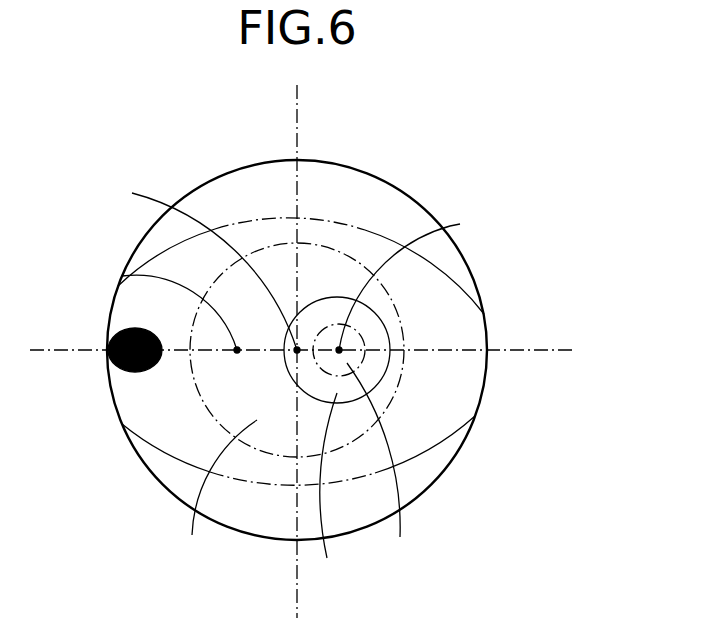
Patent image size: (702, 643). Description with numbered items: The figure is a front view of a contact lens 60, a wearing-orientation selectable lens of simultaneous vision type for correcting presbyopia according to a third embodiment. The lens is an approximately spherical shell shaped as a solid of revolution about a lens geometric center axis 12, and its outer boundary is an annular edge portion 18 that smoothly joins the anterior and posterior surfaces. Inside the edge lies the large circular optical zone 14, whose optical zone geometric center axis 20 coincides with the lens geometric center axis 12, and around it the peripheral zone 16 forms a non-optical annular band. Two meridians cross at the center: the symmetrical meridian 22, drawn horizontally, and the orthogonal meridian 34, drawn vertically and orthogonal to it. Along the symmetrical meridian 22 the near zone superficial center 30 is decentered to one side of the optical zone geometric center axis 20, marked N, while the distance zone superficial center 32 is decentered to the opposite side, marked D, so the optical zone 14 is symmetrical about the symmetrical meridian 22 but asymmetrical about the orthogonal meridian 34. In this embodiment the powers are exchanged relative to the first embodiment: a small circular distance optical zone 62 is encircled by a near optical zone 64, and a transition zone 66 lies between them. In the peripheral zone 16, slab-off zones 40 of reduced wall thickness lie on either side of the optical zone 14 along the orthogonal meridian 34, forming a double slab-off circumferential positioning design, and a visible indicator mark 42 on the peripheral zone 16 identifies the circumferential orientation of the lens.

The lens geometric center axis 12 is at (184, 265).
The optical zone geometric center axis 20 is at (184, 265).
The optical zone 14 is at (415, 297).
The peripheral zone 16 is at (477, 328).
The edge portion 18 is at (487, 382).
The symmetrical meridian 22 is at (555, 350).
The near zone superficial center 30 is at (122, 276).
The distance zone superficial center 32 is at (401, 294).
The orthogonal meridian 34 is at (297, 113).
The slab-off zone 40 is at (350, 190).
The indicator mark 42 is at (112, 328).
The contact lens 60 is at (348, 333).
The distance optical zone 62 is at (381, 465).
The near optical zone 64 is at (218, 491).
The transition zone 66 is at (332, 490).